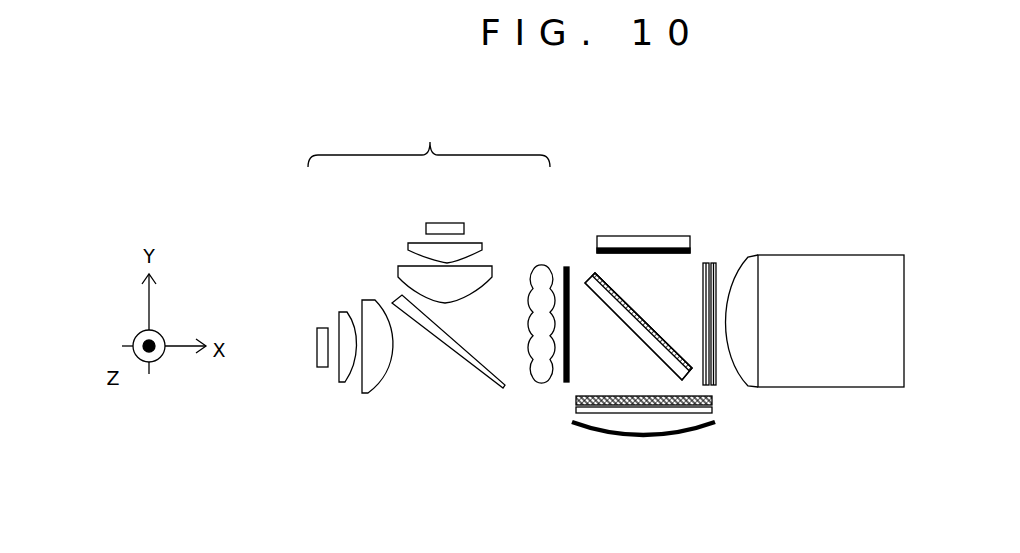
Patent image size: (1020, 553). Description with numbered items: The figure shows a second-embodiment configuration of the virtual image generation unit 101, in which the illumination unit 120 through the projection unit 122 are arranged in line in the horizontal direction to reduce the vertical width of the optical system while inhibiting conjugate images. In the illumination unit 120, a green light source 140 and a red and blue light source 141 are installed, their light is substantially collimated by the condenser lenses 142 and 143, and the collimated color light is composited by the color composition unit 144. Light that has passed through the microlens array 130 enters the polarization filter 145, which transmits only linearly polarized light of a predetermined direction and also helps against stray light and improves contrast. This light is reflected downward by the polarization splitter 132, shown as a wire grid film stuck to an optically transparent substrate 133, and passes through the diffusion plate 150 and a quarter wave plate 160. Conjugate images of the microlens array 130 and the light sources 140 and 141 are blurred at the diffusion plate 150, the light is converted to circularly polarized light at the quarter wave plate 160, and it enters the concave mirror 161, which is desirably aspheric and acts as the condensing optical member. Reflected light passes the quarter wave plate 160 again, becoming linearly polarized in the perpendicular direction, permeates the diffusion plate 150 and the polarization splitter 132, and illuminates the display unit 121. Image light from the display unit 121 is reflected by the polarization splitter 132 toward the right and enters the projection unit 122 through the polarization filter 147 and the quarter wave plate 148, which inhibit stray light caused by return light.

The virtual image generation unit 101 is at (765, 131).
The illumination unit 120 is at (429, 141).
The display unit 121 is at (640, 236).
The projection unit 122 is at (832, 265).
The microlens array 130 is at (537, 265).
The polarization splitter 132 is at (637, 317).
The optically transparent substrate 133 is at (642, 337).
The light source 140 is at (318, 345).
The light source 141 is at (443, 223).
The condenser lens 142 is at (340, 378).
The condenser lens 143 is at (363, 393).
The color composition unit 144 is at (440, 340).
The polarization filter 145 is at (567, 267).
The polarization filter 147 is at (705, 263).
The quarter wave plate 148 is at (713, 263).
The diffusion plate 150 is at (712, 401).
The quarter wave plate 160 is at (712, 412).
The concave mirror 161 is at (647, 437).